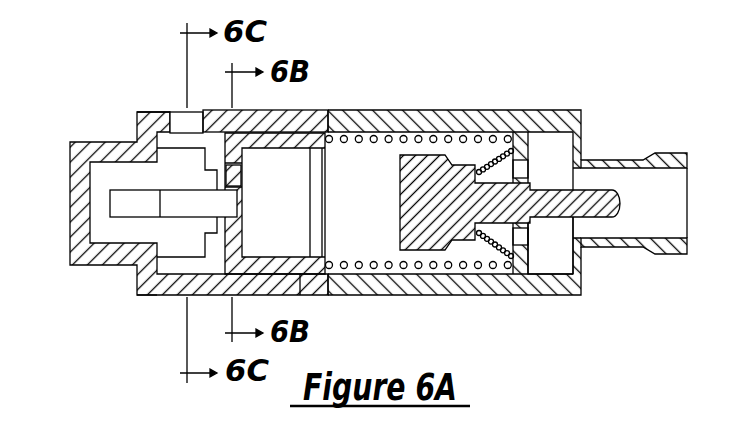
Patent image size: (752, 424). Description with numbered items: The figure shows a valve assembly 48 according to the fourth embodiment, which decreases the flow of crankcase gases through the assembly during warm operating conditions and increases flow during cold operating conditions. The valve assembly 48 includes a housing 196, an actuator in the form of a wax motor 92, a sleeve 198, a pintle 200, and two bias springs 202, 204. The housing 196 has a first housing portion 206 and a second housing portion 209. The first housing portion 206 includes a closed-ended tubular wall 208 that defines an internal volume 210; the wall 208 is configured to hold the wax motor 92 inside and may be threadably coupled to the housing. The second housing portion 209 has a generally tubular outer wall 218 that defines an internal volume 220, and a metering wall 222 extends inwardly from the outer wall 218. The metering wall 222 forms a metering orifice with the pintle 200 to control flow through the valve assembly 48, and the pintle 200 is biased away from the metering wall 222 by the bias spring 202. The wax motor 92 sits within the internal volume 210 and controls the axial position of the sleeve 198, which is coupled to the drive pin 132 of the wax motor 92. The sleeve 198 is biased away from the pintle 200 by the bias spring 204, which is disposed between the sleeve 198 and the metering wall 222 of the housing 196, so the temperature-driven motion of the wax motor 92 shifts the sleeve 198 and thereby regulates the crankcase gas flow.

The valve assembly 48 is at (383, 82).
The wax motor 92 is at (105, 232).
The drive pin 132 is at (219, 203).
The housing 196 is at (435, 110).
The sleeve 198 is at (302, 288).
The pintle 200 is at (402, 172).
The bias spring 202 is at (494, 266).
The bias spring 204 is at (419, 277).
The first housing portion 206 is at (103, 256).
The closed-ended tubular wall 208 is at (139, 296).
The second housing portion 209 is at (572, 110).
The internal volume 210 is at (112, 158).
The outer wall 218 is at (487, 125).
The internal volume 220 is at (378, 240).
The metering wall 222 is at (552, 278).